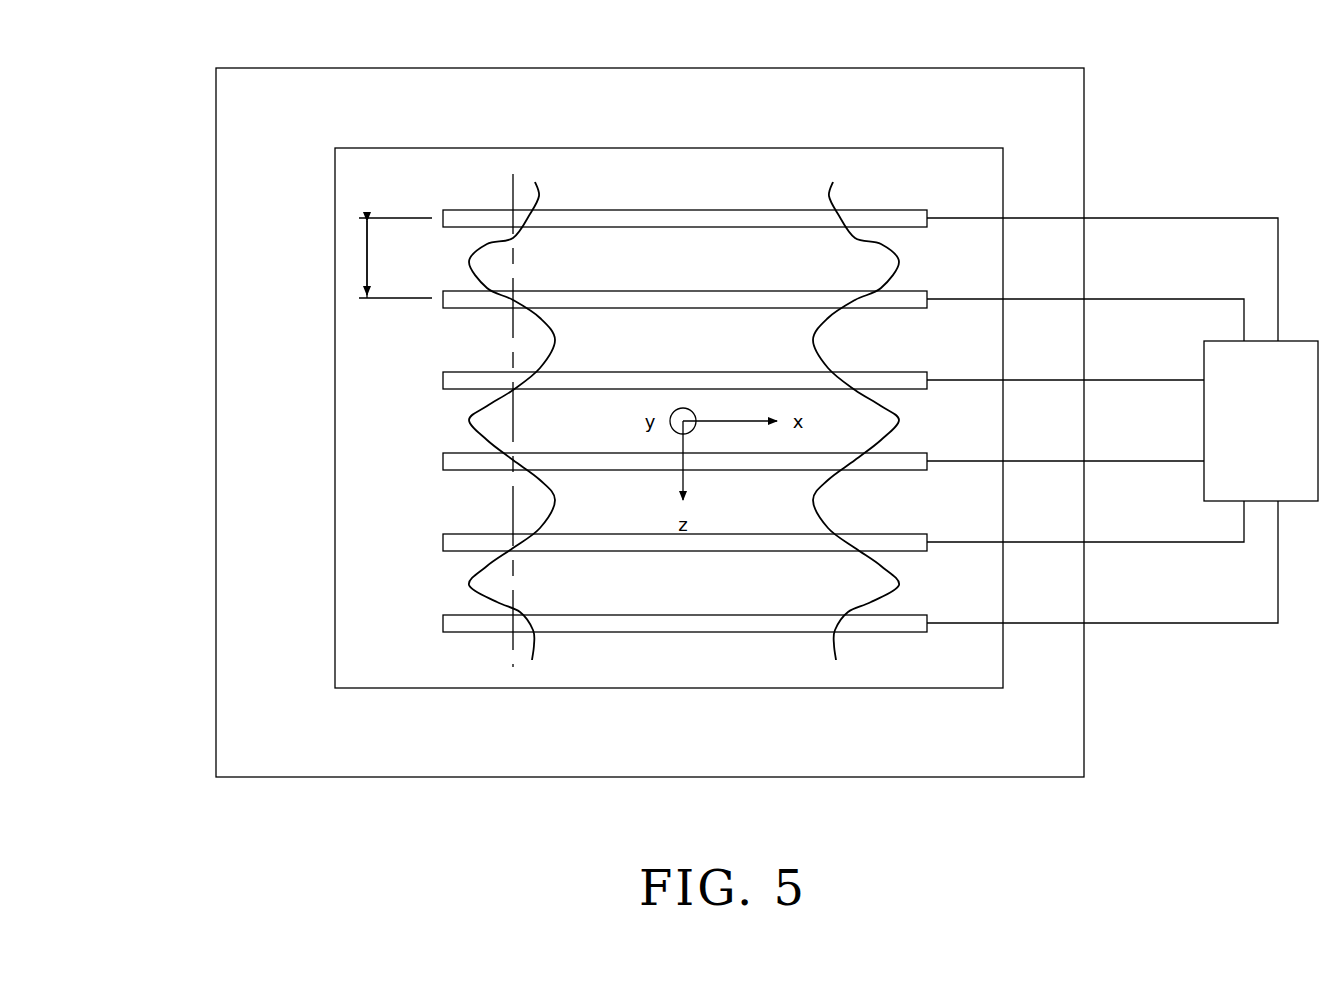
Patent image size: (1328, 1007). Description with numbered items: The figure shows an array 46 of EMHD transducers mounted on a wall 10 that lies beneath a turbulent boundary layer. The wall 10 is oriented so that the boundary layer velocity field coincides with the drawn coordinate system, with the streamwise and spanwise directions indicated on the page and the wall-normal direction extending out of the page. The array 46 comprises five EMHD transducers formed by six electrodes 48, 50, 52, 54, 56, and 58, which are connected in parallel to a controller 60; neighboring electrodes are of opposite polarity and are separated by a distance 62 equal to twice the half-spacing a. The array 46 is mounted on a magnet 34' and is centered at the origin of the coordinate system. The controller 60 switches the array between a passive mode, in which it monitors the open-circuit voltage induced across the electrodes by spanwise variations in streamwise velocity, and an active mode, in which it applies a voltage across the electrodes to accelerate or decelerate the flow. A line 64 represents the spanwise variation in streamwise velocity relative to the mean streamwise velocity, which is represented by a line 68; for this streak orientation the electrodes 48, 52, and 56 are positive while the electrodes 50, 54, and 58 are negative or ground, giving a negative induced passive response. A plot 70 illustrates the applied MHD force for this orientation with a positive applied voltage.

The wall 10 is at (1084, 770).
The magnet 34' is at (746, 436).
The array 46 is at (1130, 88).
The electrode 48 is at (883, 210).
The electrode 50 is at (883, 291).
The electrode 52 is at (883, 372).
The electrode 54 is at (883, 453).
The electrode 56 is at (883, 534).
The electrode 58 is at (883, 615).
The controller 60 is at (1281, 423).
The distance 62 is at (366, 260).
The line 64 is at (536, 650).
The line 68 is at (508, 657).
The plot 70 is at (832, 650).